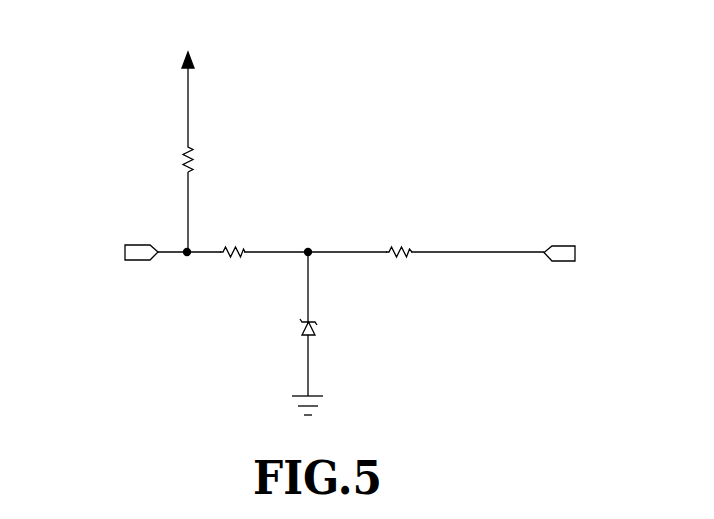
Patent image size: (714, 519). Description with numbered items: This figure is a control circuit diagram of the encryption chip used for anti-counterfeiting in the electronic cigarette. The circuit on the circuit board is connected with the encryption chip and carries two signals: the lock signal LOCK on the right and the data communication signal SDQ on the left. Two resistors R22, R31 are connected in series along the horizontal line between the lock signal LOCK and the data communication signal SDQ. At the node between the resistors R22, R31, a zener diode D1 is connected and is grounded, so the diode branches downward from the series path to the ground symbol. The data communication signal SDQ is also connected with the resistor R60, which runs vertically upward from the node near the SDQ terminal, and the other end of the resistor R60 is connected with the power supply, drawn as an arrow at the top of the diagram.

The resistor R60 is at (171, 158).
The resistor R22 is at (237, 269).
The resistor R31 is at (403, 269).
The zener diode D1 is at (323, 328).
The data communication signal SDQ is at (113, 253).
The lock signal LOCK is at (577, 253).